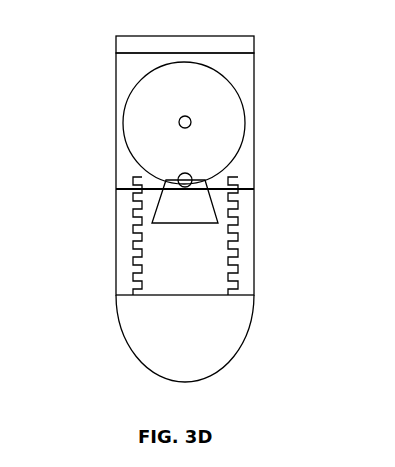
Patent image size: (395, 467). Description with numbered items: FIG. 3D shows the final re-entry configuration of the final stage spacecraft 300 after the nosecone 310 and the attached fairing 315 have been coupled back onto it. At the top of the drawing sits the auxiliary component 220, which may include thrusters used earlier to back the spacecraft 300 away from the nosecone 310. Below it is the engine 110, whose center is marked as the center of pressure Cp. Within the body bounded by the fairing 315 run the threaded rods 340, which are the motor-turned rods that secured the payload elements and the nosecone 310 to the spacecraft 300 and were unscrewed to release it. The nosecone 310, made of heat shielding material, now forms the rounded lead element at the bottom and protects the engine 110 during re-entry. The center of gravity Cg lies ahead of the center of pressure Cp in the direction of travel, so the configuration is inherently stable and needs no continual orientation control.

The final stage spacecraft 300 is at (96, 98).
The auxiliary component 220 is at (254, 44).
The engine 110 is at (243, 120).
The center of pressure Cp is at (191, 125).
The center of gravity Cg is at (192, 183).
The threaded rods 340 is at (137, 220).
The fairing 315 is at (254, 247).
The nosecone 310 is at (218, 343).